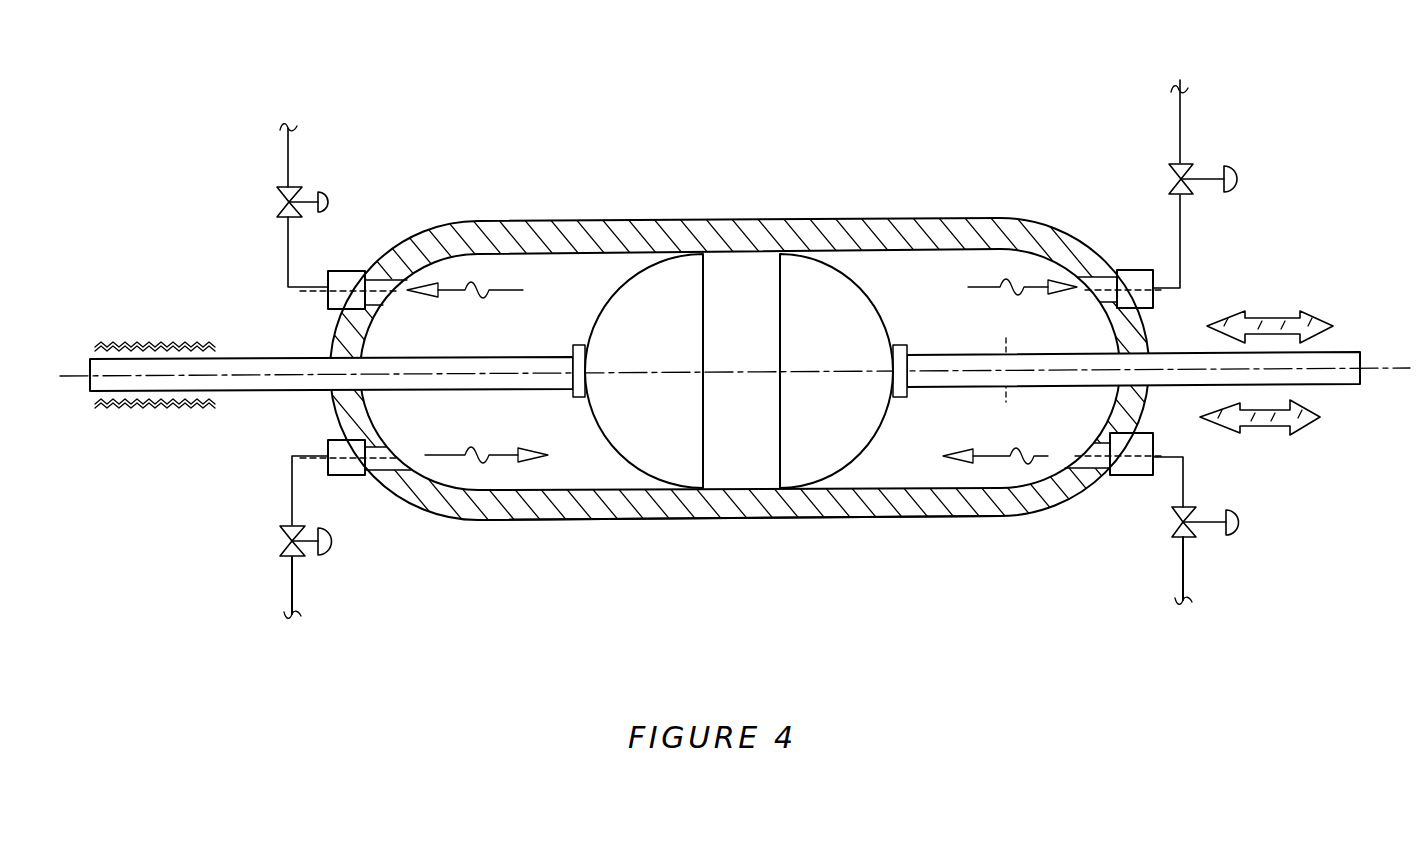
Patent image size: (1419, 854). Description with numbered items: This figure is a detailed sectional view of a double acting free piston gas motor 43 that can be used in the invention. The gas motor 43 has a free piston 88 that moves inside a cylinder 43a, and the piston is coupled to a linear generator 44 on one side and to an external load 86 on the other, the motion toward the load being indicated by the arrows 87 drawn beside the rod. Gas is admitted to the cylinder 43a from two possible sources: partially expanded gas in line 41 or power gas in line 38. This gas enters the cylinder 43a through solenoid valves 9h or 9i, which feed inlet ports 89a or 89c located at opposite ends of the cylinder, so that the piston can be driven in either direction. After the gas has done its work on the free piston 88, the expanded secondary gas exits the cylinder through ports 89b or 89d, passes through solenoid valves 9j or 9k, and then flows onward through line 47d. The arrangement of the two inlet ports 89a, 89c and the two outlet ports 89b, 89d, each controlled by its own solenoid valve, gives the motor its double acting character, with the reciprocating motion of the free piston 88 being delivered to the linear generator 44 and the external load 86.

The gas motor 43 is at (740, 356).
The cylinder 43a is at (717, 519).
The linear generator 44 is at (178, 404).
The line 47d is at (289, 162).
The solenoid valve 9j is at (330, 202).
The solenoid valve 9k is at (1241, 176).
The solenoid valve 9h is at (335, 542).
The solenoid valve 9i is at (1243, 522).
The port 89a is at (330, 446).
The port 89b is at (345, 271).
The port 89c is at (1135, 476).
The port 89d is at (1133, 271).
The free piston 88 is at (750, 357).
The rod extension stroke 87 is at (1193, 318).
The external load 86 is at (1255, 433).
The line 41 is at (737, 575).
The line 38 is at (737, 575).